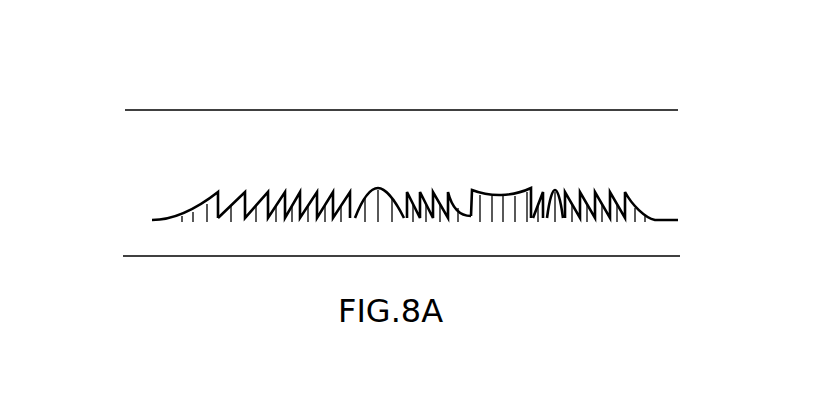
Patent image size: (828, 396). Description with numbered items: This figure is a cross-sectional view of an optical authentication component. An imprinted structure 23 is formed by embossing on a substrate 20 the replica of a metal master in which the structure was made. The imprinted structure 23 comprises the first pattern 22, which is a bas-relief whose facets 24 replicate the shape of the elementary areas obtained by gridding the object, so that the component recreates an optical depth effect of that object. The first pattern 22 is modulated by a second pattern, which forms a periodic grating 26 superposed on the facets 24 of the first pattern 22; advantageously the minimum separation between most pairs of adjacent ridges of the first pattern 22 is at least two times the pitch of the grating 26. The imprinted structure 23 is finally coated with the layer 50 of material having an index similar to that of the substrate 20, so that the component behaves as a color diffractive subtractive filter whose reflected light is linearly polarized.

The layer 50 is at (225, 138).
The substrate 20 is at (132, 243).
The periodic grating 26 is at (196, 215).
The facets 24 is at (266, 194).
The imprinted structure 23 is at (493, 168).
The first pattern 22 is at (614, 190).